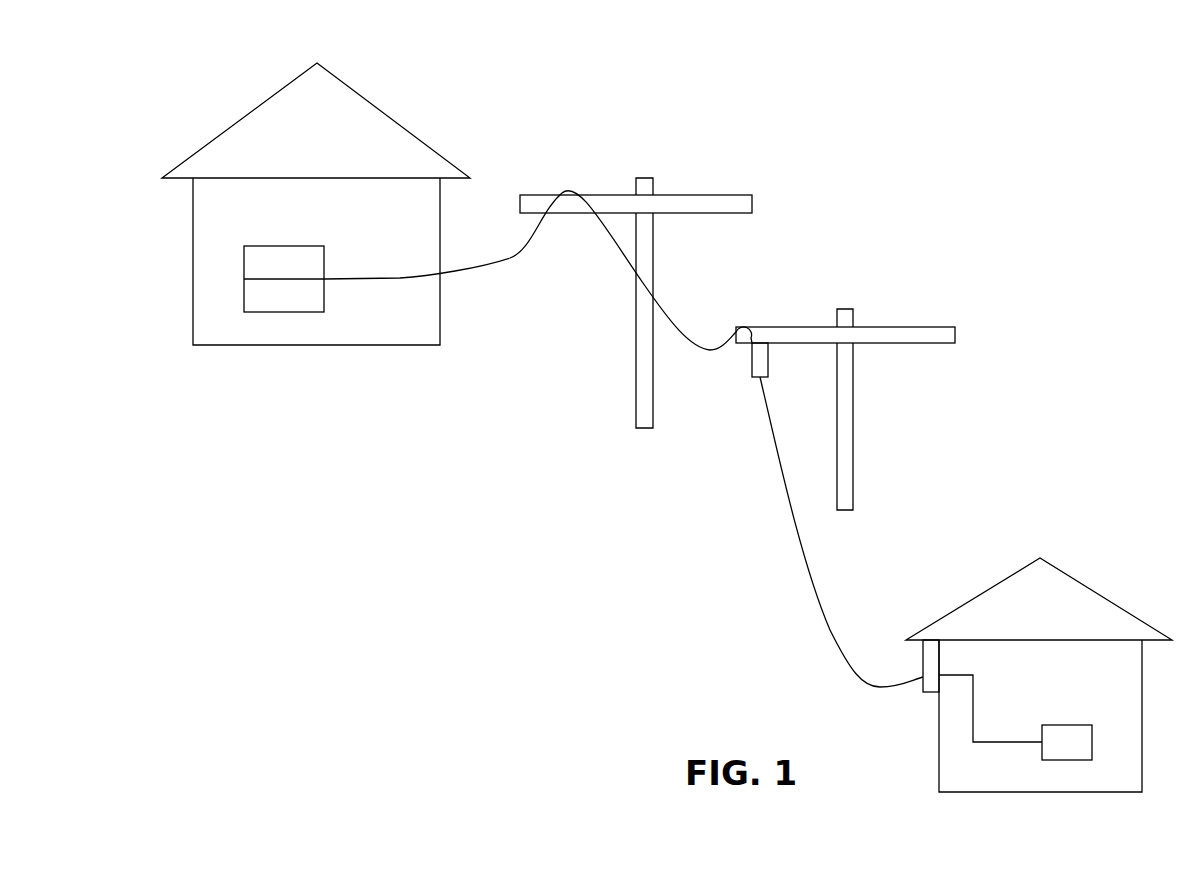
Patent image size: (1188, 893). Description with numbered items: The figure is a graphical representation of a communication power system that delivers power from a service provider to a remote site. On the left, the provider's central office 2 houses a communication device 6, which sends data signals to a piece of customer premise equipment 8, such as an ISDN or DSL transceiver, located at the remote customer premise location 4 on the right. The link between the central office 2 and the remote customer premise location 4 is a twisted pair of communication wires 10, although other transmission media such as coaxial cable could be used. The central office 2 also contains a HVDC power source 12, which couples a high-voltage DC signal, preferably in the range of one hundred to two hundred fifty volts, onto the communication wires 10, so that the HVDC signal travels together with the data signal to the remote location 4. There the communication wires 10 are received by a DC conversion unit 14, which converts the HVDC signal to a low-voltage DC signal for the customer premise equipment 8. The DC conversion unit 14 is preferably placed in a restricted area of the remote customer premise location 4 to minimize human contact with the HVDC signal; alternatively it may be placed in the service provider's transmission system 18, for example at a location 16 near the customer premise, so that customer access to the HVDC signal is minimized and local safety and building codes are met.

The central office 2 is at (426, 108).
The remote customer premise location 4 is at (1128, 589).
The communication device 6 is at (343, 248).
The customer premise equipment 8 is at (1111, 745).
The communication wires 10 is at (688, 291).
The HVDC power source 12 is at (292, 315).
The DC conversion unit 14 is at (906, 711).
The location 16 is at (734, 394).
The transmission system 18 is at (908, 408).